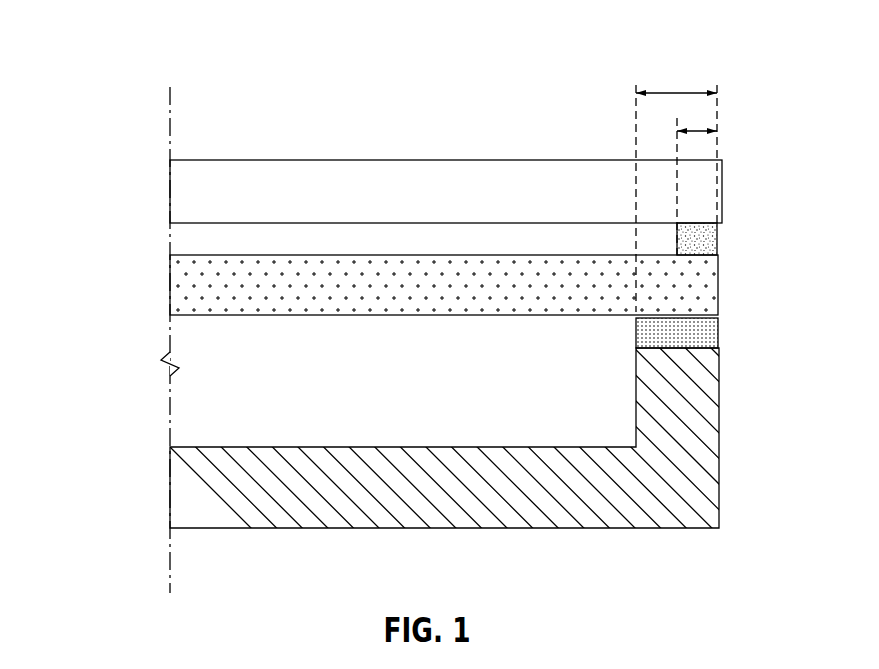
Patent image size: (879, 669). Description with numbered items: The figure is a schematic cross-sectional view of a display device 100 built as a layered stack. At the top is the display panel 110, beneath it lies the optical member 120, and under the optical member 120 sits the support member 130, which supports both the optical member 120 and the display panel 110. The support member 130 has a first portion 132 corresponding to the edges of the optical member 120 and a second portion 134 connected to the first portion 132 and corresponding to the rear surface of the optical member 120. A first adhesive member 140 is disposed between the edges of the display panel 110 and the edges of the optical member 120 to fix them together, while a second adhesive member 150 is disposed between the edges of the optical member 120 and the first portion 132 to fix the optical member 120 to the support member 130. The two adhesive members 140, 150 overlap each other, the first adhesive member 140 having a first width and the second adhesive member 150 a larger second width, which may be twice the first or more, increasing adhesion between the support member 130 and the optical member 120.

The display device 100 is at (457, 40).
The display panel 110 is at (197, 193).
The optical member 120 is at (197, 290).
The support member 130 is at (72, 412).
The first portion 132 is at (670, 402).
The second portion 134 is at (197, 490).
The first adhesive member 140 is at (702, 240).
The second adhesive member 150 is at (703, 332).